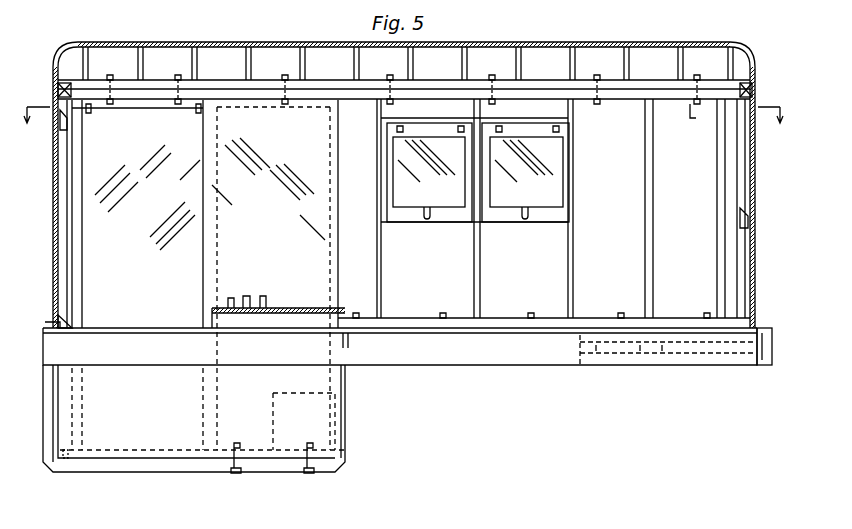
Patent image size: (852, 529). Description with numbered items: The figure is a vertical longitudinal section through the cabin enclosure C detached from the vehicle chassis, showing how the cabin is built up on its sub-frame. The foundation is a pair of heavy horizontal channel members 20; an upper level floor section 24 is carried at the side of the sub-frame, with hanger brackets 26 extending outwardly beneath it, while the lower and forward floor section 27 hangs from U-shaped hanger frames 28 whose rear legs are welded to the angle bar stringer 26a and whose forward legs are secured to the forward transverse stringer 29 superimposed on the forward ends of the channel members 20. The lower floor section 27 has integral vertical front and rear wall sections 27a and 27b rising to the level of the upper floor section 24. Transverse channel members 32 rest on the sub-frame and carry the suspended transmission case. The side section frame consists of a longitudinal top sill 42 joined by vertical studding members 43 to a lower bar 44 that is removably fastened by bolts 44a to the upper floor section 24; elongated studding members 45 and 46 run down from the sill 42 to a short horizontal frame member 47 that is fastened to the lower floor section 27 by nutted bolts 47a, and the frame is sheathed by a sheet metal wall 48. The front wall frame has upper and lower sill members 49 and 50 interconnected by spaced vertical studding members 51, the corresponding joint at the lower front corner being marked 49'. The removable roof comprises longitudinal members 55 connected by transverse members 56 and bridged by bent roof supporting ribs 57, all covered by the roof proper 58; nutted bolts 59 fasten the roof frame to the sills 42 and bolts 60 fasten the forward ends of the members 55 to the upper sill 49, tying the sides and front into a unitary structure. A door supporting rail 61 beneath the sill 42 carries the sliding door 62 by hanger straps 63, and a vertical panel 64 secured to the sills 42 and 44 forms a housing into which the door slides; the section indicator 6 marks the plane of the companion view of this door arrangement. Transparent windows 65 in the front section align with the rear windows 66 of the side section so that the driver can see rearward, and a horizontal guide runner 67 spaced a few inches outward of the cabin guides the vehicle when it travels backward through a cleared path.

The horizontal channel member 20 is at (480, 348).
The upper level floor section 24 is at (508, 328).
The hanger bracket 26 is at (348, 365).
The angle bar stringer 26a is at (350, 340).
The lower floor section 27 is at (178, 458).
The front wall section 27a is at (60, 404).
The rear wall section 27b is at (345, 410).
The hanger frame 28 is at (135, 472).
The forward transverse angle bar stringer 29 is at (48, 322).
The channel member 32 is at (262, 300).
The top member or sill 42 is at (626, 95).
The vertical studding member 43 is at (645, 234).
The lower longitudinal frame member or bar 44 is at (596, 318).
The bolt 44a is at (442, 312).
The elongated vertical studding member 45 is at (330, 238).
The elongated vertical studding member 46 is at (218, 220).
The short horizontal frame member 47 is at (262, 446).
The nutted bolt 47a is at (310, 476).
The wall 48 is at (172, 7).
The upper sill member 49 is at (381, 91).
The lower corner joint 49' is at (42, 489).
The lower sill member 50 is at (70, 318).
The vertical studding member 51 is at (70, 282).
The longitudinal horizontal roof frame member 55 is at (446, 85).
The transverse roof frame member 56 is at (55, 82).
The roof supporting rib 57 is at (246, 64).
The roof proper 58 is at (495, 43).
The nutted bolt 59 is at (696, 118).
The bolt 60 is at (70, 82).
The door supporting rail 61 is at (152, 112).
The door 62 is at (142, 214).
The hanger strap 63 is at (196, 112).
The vertical panel 64 is at (275, 214).
The window 65 is at (68, 173).
The rear window 66 is at (750, 176).
The guide runner 67 is at (772, 360).
The section line 6 is at (411, 125).
The cabin enclosure C is at (749, 39).